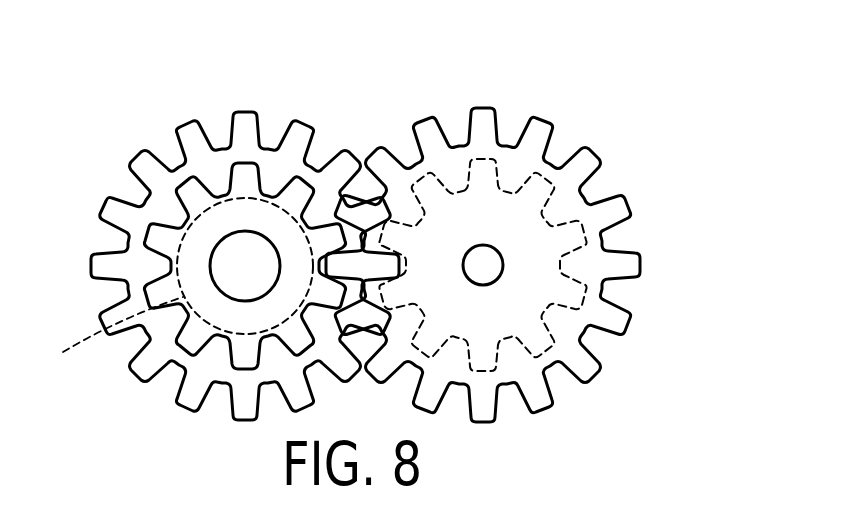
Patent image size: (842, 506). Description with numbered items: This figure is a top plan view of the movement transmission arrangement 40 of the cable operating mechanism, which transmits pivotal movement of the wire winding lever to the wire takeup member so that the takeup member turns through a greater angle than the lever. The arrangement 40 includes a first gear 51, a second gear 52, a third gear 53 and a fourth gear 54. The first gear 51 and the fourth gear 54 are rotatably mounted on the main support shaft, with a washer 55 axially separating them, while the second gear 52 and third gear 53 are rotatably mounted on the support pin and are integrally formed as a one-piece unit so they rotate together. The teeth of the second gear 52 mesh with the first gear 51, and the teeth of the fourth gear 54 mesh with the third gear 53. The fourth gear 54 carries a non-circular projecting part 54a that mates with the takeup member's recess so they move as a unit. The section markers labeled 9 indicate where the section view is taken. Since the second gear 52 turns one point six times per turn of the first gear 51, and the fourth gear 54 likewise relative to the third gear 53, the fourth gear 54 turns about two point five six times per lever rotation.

The movement transmission arrangement 40 is at (531, 96).
The first gear 51 is at (173, 383).
The second gear 52 is at (548, 158).
The third gear 53 is at (588, 345).
The fourth gear 54 is at (143, 332).
The non-circular projecting part 54a is at (190, 228).
The washer 55 is at (109, 331).
The section line 9- 9 is at (72, 267).